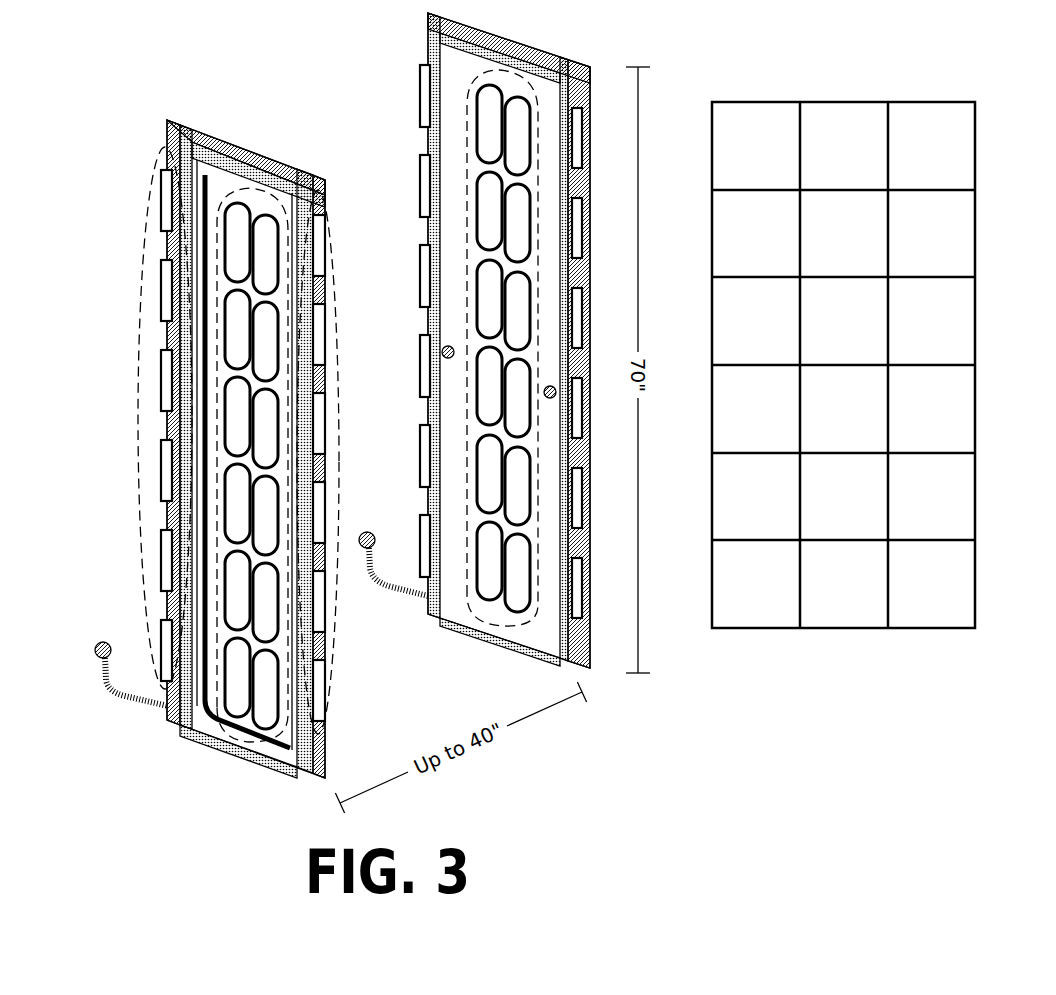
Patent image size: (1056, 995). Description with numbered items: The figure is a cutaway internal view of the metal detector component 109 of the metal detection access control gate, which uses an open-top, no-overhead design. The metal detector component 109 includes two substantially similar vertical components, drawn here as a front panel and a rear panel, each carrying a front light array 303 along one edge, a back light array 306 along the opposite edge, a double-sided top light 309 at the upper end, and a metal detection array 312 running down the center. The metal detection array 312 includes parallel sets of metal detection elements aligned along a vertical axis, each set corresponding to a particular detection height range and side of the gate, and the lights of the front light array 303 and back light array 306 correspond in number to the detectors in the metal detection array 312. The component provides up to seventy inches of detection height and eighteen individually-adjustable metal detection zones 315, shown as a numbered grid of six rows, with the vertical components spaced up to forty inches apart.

The metal detector component 109 is at (153, 58).
The front light array 303 is at (150, 196).
The back light array 306 is at (333, 240).
The double-sided top light 309 is at (252, 136).
The metal detection array 312 is at (213, 433).
The individually-adjustable metal detection zones 315 is at (925, 48).